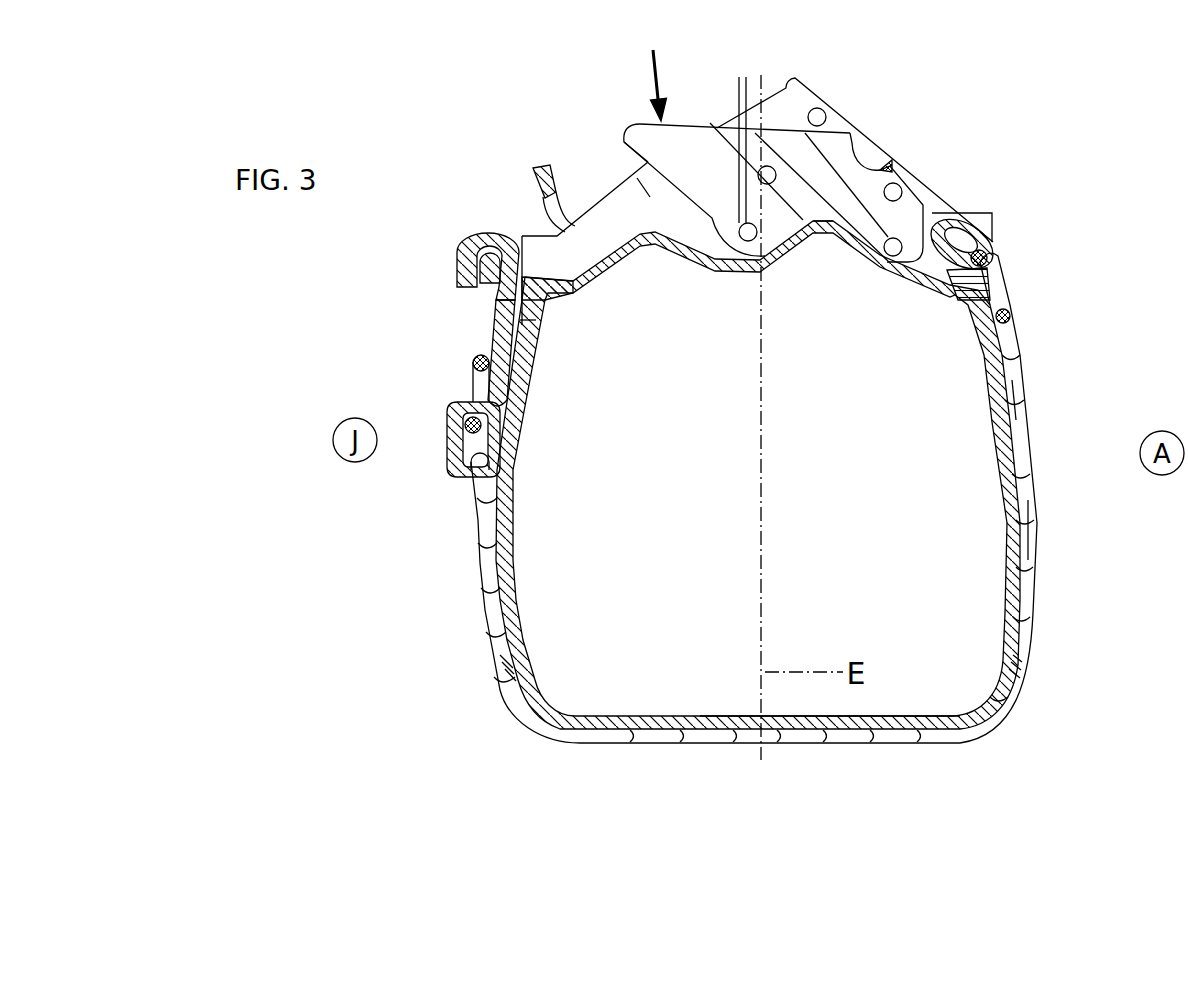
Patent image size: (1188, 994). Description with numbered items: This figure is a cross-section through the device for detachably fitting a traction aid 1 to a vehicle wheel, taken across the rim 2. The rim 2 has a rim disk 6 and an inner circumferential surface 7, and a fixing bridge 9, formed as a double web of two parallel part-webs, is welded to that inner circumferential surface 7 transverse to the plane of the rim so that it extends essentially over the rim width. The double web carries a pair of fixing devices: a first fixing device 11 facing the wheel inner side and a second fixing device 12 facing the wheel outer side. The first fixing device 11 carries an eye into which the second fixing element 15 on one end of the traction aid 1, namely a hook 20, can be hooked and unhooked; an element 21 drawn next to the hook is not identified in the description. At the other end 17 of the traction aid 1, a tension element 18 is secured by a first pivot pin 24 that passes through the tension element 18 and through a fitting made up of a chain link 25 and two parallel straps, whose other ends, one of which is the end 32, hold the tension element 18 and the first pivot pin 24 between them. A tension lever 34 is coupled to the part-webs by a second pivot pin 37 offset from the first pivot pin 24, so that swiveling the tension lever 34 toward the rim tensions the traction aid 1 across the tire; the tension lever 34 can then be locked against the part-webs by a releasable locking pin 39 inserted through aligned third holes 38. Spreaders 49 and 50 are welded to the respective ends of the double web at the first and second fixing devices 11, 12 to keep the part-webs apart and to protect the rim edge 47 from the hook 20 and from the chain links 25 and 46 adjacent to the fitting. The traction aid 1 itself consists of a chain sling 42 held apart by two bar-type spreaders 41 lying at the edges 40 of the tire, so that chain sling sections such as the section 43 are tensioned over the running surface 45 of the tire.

The traction aid 1 is at (476, 570).
The rim 2 is at (1034, 410).
The rim disk 6 is at (553, 165).
The inner circumferential surface 7 is at (583, 203).
The fixing bridge 9 is at (613, 183).
The first fixing device 11 is at (507, 227).
The second fixing device 12 is at (998, 256).
The second fixing element 15 is at (468, 230).
The other end of the traction aid 17 is at (1021, 358).
The tension element 18 is at (652, 69).
The hook 20 is at (457, 270).
The rod with screw 21 is at (485, 288).
The first pivot pin 24 is at (896, 186).
The chain link 25 is at (965, 228).
The other end of strap 32 is at (888, 170).
The tension lever 34 is at (697, 150).
The second pivot pin 37 is at (867, 265).
The third holes 38 is at (770, 166).
The releasable locking pin 39 is at (710, 258).
The tire edges 40 is at (533, 690).
The bar-type spreader 41 is at (497, 672).
The chain sling 42 is at (1045, 525).
The chain sling section 43 is at (805, 735).
The running surface 45 is at (897, 733).
The chain link 46 is at (1000, 298).
The rim edge 47 is at (523, 313).
The spreader 49 is at (547, 300).
The spreader 50 is at (960, 300).